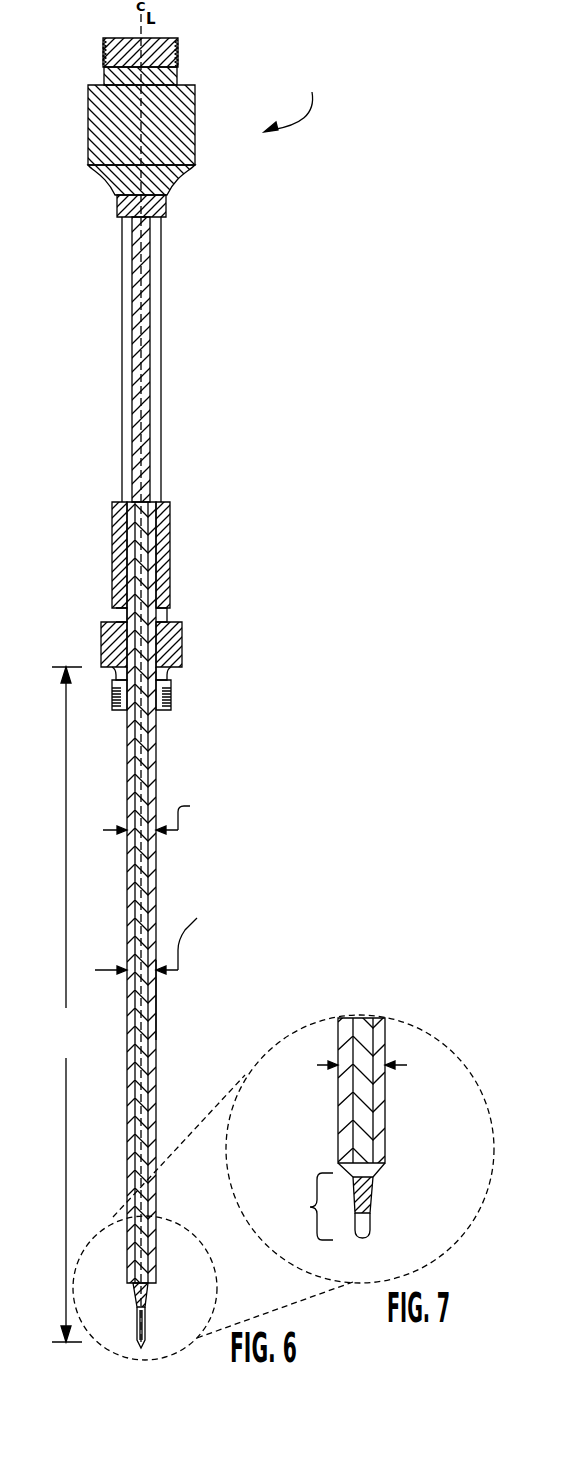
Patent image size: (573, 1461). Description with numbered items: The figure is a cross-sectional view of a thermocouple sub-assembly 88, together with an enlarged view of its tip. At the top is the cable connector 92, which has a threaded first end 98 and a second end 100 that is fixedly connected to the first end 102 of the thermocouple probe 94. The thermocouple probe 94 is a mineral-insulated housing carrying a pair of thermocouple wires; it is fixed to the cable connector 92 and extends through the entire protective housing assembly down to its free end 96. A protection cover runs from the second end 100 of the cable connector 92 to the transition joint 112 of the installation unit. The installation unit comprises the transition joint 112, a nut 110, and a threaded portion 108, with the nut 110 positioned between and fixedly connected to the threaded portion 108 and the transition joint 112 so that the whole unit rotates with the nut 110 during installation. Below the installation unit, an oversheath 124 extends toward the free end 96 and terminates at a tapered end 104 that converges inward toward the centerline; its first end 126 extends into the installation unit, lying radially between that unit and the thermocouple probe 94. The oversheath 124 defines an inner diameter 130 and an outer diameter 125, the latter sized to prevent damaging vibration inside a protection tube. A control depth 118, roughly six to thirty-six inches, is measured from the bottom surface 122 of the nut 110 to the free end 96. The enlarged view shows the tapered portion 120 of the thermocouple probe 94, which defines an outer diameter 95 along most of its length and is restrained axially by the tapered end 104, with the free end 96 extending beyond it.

In FIG. 6, the thermocouple sub-assembly 88 is at (293, 97).
In FIG. 6, the cable connector 92 is at (98, 110).
In FIG. 6, the thermocouple probe 94 is at (141, 898).
In FIG. 7, the thermocouple probe 94 is at (367, 1110).
In FIG. 7, the outer diameter 95 is at (326, 1065).
In FIG. 6, the free end 96 is at (135, 1349).
In FIG. 7, the free end 96 is at (365, 1233).
In FIG. 6, the threaded first end 98 is at (165, 47).
In FIG. 6, the second end 100 is at (167, 210).
In FIG. 6, the first end 102 is at (148, 229).
In FIG. 6, the tapered end 104 is at (152, 1285).
In FIG. 7, the tapered end 104 is at (378, 1168).
In FIG. 6, the threaded portion 108 is at (168, 705).
In FIG. 6, the nut 110 is at (108, 640).
In FIG. 6, the transition joint 112 is at (138, 562).
In FIG. 6, the control depth 118 is at (66, 1004).
In FIG. 7, the tapered portion 120 is at (304, 1206).
In FIG. 6, the bottom surface 122 is at (172, 670).
In FIG. 6, the oversheath 124 is at (158, 1028).
In FIG. 6, the outer diameter 125 is at (163, 938).
In FIG. 6, the first end 126 is at (123, 520).
In FIG. 6, the inner diameter 130 is at (160, 814).